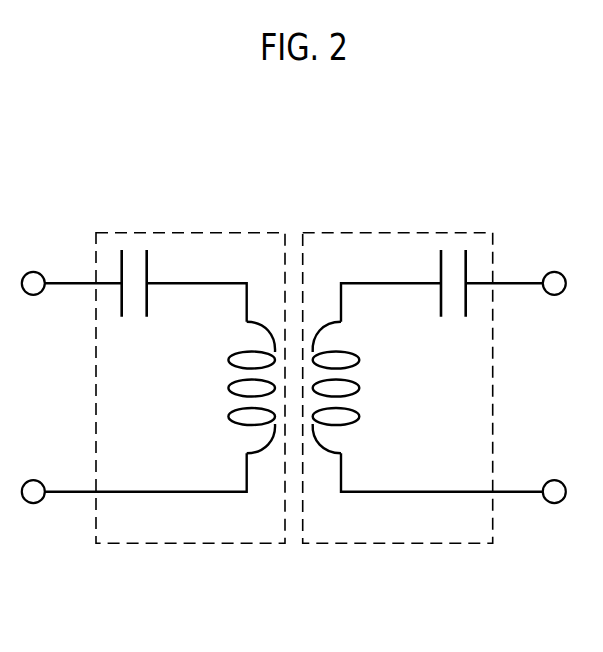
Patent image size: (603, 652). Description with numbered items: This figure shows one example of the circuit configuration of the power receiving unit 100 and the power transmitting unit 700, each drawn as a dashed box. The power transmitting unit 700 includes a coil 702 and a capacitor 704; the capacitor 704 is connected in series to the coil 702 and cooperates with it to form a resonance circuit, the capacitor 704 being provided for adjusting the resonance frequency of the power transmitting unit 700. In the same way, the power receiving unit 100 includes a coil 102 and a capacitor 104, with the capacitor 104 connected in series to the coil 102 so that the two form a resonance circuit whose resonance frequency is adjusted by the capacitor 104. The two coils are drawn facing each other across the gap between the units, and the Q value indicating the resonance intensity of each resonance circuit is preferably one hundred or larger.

The power transmitting unit 700 is at (243, 232).
The capacitor 704 is at (150, 267).
The coil 702 is at (230, 417).
The power receiving unit 100 is at (347, 232).
The capacitor 104 is at (438, 267).
The coil 102 is at (358, 417).